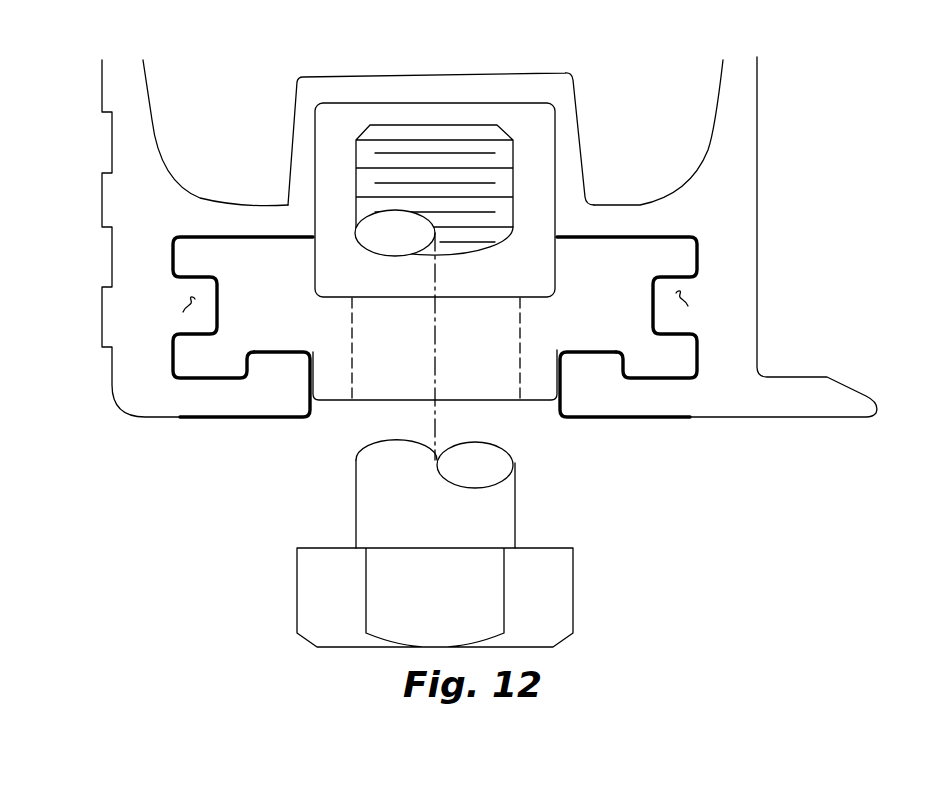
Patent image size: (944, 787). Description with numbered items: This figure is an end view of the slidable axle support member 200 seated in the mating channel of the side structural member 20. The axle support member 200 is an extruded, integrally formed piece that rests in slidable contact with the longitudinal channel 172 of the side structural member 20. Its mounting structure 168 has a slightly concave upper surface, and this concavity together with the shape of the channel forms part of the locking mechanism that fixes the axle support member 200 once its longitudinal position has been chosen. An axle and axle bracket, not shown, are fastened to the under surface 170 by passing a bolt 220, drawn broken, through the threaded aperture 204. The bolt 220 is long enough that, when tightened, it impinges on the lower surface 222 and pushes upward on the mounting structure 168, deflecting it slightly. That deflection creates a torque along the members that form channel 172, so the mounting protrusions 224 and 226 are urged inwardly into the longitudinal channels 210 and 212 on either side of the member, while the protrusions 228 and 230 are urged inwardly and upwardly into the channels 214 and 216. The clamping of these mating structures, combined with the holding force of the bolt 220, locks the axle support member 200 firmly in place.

The side structural member 20 is at (731, 136).
The mounting structure 168 is at (465, 77).
The under surface 170 is at (180, 420).
The longitudinal channel 172 is at (314, 410).
The axle support member 200 is at (543, 369).
The threaded bolt hole 204 is at (437, 293).
The longitudinal channel 210 is at (223, 312).
The longitudinal channel 212 is at (655, 300).
The longitudinal channel 214 is at (283, 350).
The longitudinal channel 216 is at (587, 350).
The bolt 220 is at (357, 167).
The lower surface 222 is at (510, 105).
The mounting protrusion 224 is at (183, 312).
The mounting protrusion 226 is at (688, 306).
The protrusion 228 is at (291, 367).
The protrusion 230 is at (595, 367).